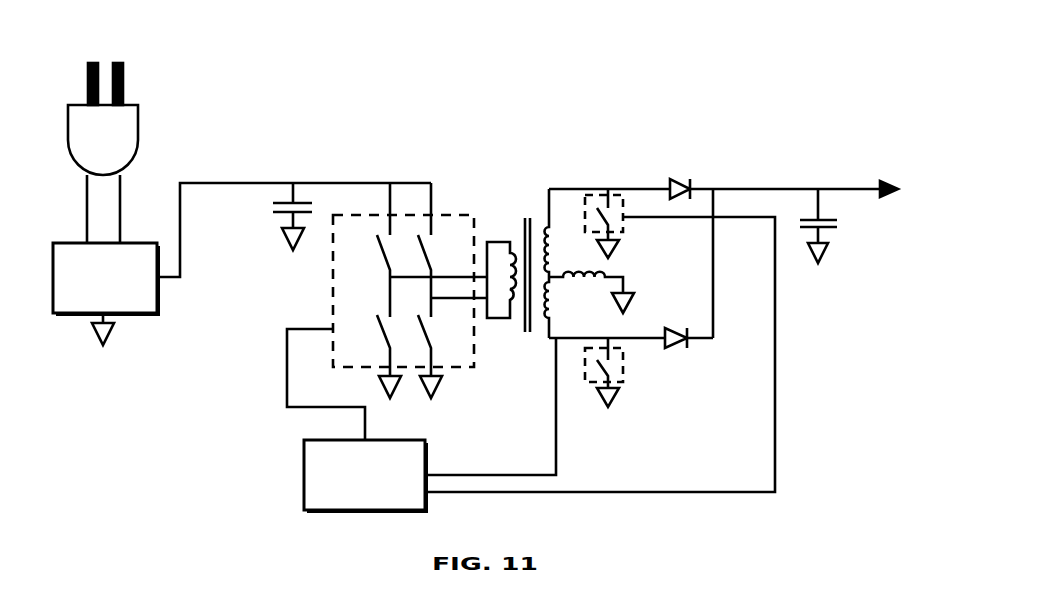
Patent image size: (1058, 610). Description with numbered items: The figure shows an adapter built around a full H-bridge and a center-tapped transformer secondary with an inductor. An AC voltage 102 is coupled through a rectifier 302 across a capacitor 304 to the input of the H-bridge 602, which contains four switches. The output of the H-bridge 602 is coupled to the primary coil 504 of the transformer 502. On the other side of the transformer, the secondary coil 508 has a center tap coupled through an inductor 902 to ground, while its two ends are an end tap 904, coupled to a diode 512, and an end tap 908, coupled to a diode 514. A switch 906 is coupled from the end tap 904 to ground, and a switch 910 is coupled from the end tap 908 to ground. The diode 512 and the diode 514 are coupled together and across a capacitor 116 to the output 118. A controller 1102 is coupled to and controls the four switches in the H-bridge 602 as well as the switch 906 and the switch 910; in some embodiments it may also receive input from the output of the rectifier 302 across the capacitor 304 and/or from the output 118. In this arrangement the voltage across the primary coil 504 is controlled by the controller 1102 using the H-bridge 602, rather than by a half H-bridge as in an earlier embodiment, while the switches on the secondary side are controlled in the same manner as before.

The AC voltage 102 is at (146, 98).
The rectifier 302 is at (242, 264).
The capacitor 304 is at (266, 203).
The H-bridge 602 is at (333, 269).
The controller 1102 is at (531, 365).
The transformer 502 is at (520, 218).
The primary coil 504 is at (508, 230).
The secondary coil 508 is at (544, 225).
The end tap 904 is at (549, 187).
The switch 906 is at (628, 188).
The diode 512 is at (677, 180).
The capacitor 116 is at (843, 203).
The output 118 is at (880, 203).
The inductor 902 is at (600, 282).
The end tap 908 is at (547, 343).
The diode 514 is at (690, 355).
The switch 910 is at (637, 388).